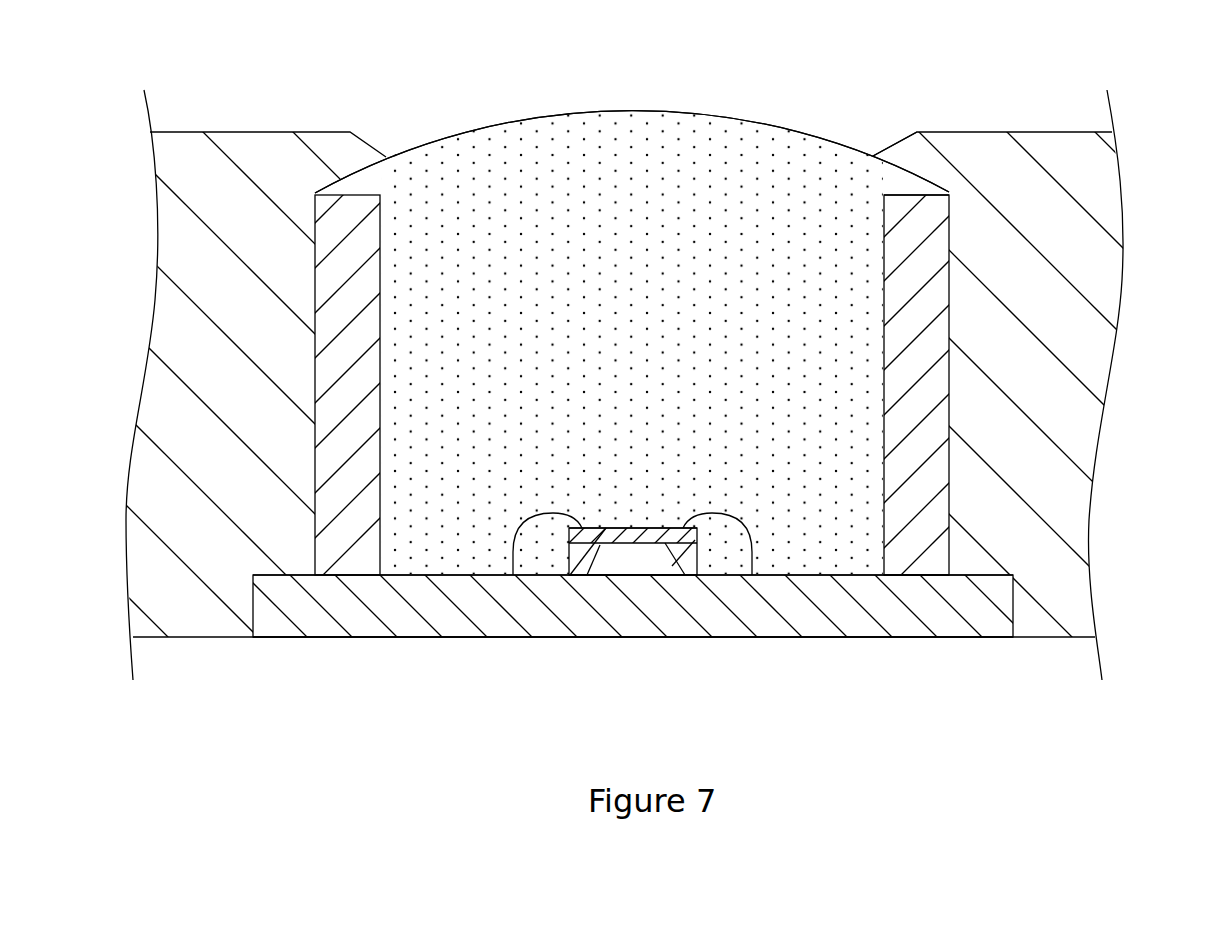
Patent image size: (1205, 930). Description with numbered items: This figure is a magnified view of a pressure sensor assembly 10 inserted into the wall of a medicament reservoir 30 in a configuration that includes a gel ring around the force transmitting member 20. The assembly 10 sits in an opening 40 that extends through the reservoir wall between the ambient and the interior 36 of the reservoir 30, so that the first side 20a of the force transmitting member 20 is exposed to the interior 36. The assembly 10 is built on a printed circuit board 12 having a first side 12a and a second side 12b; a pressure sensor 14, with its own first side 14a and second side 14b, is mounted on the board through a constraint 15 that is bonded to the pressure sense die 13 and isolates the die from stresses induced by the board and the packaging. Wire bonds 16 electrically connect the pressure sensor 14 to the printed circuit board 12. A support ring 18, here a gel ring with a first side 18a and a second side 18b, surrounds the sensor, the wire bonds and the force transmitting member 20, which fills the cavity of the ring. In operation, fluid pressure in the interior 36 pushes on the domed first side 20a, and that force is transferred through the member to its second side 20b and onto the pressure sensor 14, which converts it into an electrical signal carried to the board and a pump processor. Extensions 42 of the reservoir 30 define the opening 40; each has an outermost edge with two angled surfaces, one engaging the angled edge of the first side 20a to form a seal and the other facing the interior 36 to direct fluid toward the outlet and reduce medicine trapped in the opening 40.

The pressure sensor assembly 10 is at (447, 685).
The printed circuit board 12 is at (935, 608).
The first side of the printed circuit board 12a is at (457, 575).
The second side of the printed circuit board 12b is at (590, 640).
The pressure sense die 13 is at (652, 527).
The pressure sensor 14 is at (577, 582).
The first side of the pressure sensor 14a is at (602, 520).
The second side of the pressure sensor 14b is at (614, 548).
The constraint 15 is at (697, 562).
The wire bonds 16 is at (513, 542).
The support ring 18 is at (352, 567).
The first side of the support ring 18a is at (932, 188).
The second side of the support ring 18b is at (913, 577).
The force transmitting member 20 is at (788, 175).
The first side of the force transmitting member 20a is at (703, 112).
The second side of the force transmitting member 20b is at (663, 532).
The reservoir 30 is at (1080, 347).
The interior 36 is at (621, 57).
The opening 40 is at (502, 117).
The extensions 42 is at (888, 162).